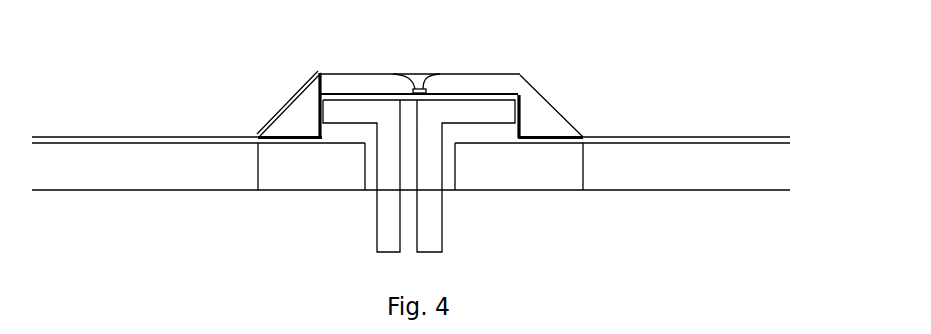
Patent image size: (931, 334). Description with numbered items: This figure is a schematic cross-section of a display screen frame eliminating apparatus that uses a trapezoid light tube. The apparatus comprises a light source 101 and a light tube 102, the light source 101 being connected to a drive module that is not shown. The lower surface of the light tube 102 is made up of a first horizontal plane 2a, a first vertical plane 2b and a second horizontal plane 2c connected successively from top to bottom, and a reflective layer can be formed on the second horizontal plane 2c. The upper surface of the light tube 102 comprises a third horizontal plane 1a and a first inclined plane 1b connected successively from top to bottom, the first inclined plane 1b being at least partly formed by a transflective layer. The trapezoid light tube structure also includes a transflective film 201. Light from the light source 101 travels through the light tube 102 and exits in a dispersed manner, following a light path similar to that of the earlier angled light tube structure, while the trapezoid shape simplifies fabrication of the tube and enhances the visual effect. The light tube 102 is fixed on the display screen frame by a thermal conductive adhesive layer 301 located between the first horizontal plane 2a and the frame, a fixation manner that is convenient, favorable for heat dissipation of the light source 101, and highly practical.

The third horizontal plane 1a is at (472, 73).
The first inclined plane 1b is at (279, 108).
The first horizontal plane 2a is at (350, 92).
The first vertical plane 2b is at (314, 105).
The second horizontal plane 2c is at (292, 141).
The light source 101 is at (419, 89).
The light tube 102 is at (503, 86).
The transflective film 201 is at (405, 77).
The thermal conductive adhesive layer 301 is at (472, 99).